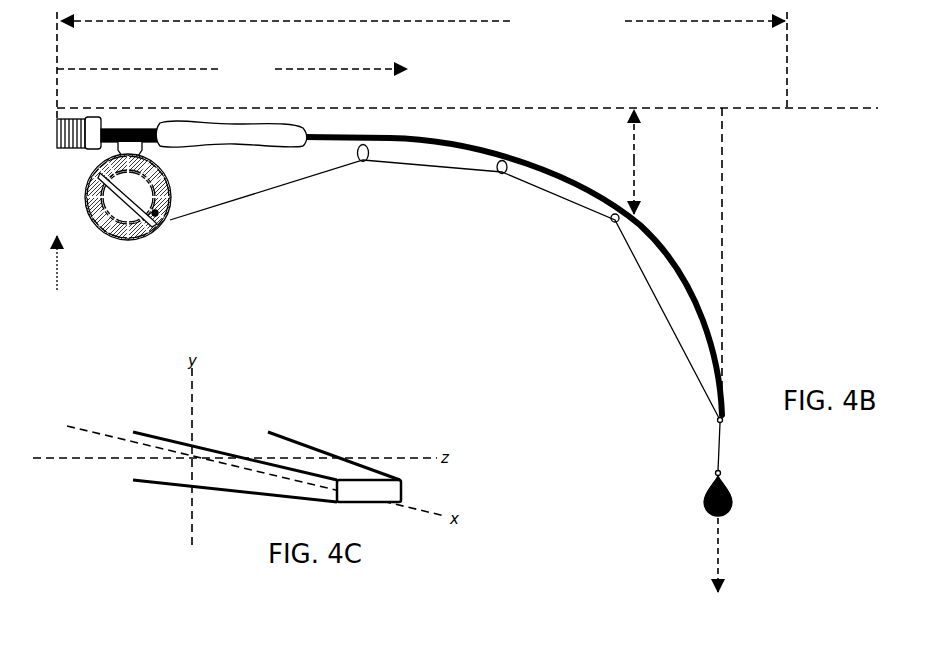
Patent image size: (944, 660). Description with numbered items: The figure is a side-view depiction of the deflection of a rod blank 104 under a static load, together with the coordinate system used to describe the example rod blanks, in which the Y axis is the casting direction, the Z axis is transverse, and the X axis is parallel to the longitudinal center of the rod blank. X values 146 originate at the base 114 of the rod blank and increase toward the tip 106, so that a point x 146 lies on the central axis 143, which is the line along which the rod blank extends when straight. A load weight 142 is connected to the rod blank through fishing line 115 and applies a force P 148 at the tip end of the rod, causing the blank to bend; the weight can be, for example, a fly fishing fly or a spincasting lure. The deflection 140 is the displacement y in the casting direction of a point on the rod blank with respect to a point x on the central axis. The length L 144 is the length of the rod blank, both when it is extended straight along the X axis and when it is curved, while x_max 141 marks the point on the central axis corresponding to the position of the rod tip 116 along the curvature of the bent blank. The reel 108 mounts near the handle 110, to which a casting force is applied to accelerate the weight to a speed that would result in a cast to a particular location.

The rod blank 104 is at (416, 146).
The tip 106 is at (361, 163).
The reel 108 is at (155, 155).
The handle 110 is at (238, 152).
The base 114 is at (59, 276).
The fishing line 115 is at (551, 195).
The rod tip 116 is at (697, 410).
The deflection 140 is at (653, 162).
The maximum deflection x_max 141 is at (722, 106).
The load weight 142 is at (747, 473).
The central axis 143 is at (468, 98).
The length L 144 is at (422, 65).
The x value 146 is at (232, 69).
The force P 148 is at (717, 581).